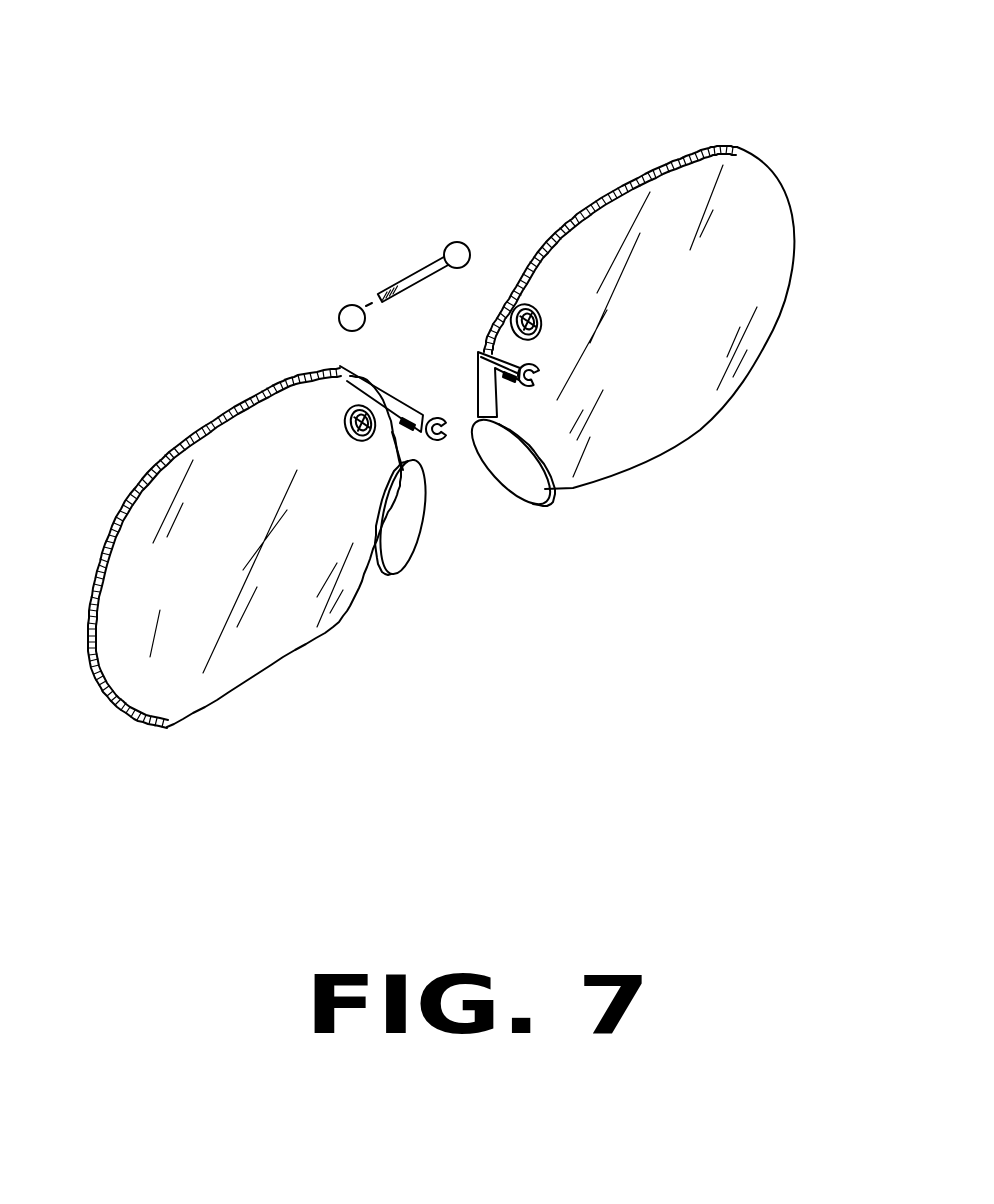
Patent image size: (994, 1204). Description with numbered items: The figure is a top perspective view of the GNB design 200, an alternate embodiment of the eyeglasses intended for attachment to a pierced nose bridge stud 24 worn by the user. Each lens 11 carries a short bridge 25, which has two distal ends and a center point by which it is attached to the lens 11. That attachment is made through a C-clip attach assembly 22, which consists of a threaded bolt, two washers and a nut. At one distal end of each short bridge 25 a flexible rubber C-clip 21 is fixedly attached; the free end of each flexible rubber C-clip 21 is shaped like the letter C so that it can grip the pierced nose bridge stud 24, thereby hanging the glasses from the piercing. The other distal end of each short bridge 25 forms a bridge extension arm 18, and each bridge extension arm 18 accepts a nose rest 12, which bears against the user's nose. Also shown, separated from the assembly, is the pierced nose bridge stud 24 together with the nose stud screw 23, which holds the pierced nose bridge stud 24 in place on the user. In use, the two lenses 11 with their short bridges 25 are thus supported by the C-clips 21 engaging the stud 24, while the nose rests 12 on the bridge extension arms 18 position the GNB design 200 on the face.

The GNB design 200 is at (733, 122).
The lens 11 is at (723, 290).
The nose rest 12 is at (540, 507).
The bridge extension arm 18 is at (477, 386).
The flexible rubber C-clip 21 is at (372, 393).
The C-clip attach assembly 22 is at (358, 441).
The nose stud screw 23 is at (340, 306).
The pierced nose bridge stud 24 is at (422, 267).
The short bridge 25 is at (484, 348).